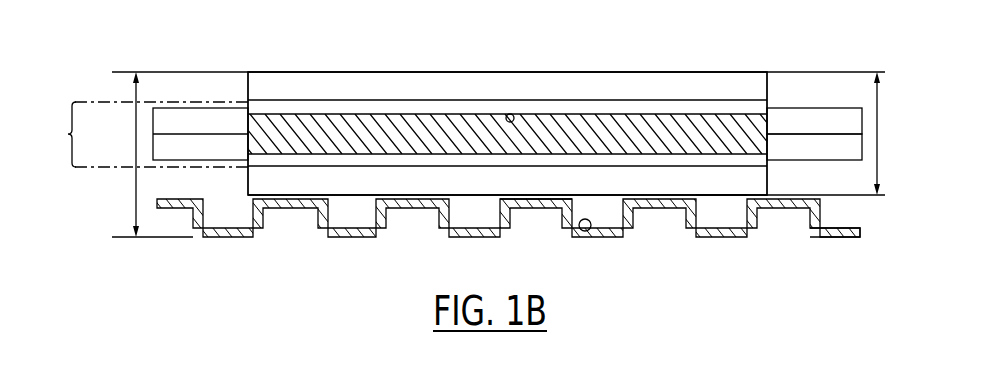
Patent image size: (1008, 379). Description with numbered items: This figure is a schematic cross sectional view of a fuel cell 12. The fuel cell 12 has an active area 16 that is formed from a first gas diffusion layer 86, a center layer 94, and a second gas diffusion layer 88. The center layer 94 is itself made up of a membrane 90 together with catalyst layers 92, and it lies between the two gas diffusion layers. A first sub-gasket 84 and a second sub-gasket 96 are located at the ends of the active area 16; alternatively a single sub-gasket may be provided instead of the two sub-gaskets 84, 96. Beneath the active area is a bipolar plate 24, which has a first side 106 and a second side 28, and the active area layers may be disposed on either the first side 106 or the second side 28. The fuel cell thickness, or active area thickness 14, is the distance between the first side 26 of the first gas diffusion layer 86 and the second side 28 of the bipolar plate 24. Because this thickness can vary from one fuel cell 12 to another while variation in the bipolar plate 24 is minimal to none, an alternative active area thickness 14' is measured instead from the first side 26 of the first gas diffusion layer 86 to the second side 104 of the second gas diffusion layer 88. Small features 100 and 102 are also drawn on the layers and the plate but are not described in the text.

The fuel cell 12 is at (745, 61).
The active area 16 is at (276, 66).
The first side of the first gas diffusion layer 26 is at (648, 70).
The first gas diffusion layer 86 is at (323, 88).
The catalyst layers 92 is at (253, 110).
The membrane 90 is at (252, 135).
The aperture 102 is at (513, 115).
The second gas diffusion layer 88 is at (312, 186).
The first sub-gasket 84 is at (792, 118).
The second sub-gasket 96 is at (827, 140).
The center layer 94 is at (144, 134).
The active area thickness 14 is at (180, 171).
The alternative active area thickness 14' is at (826, 147).
The second side of the bipolar plate 28 is at (610, 238).
The stiffener top flange 100 is at (552, 195).
The first side of the bipolar plate 106 is at (582, 231).
The second side of the second gas diffusion layer 104 is at (718, 195).
The bipolar plate 24 is at (842, 232).